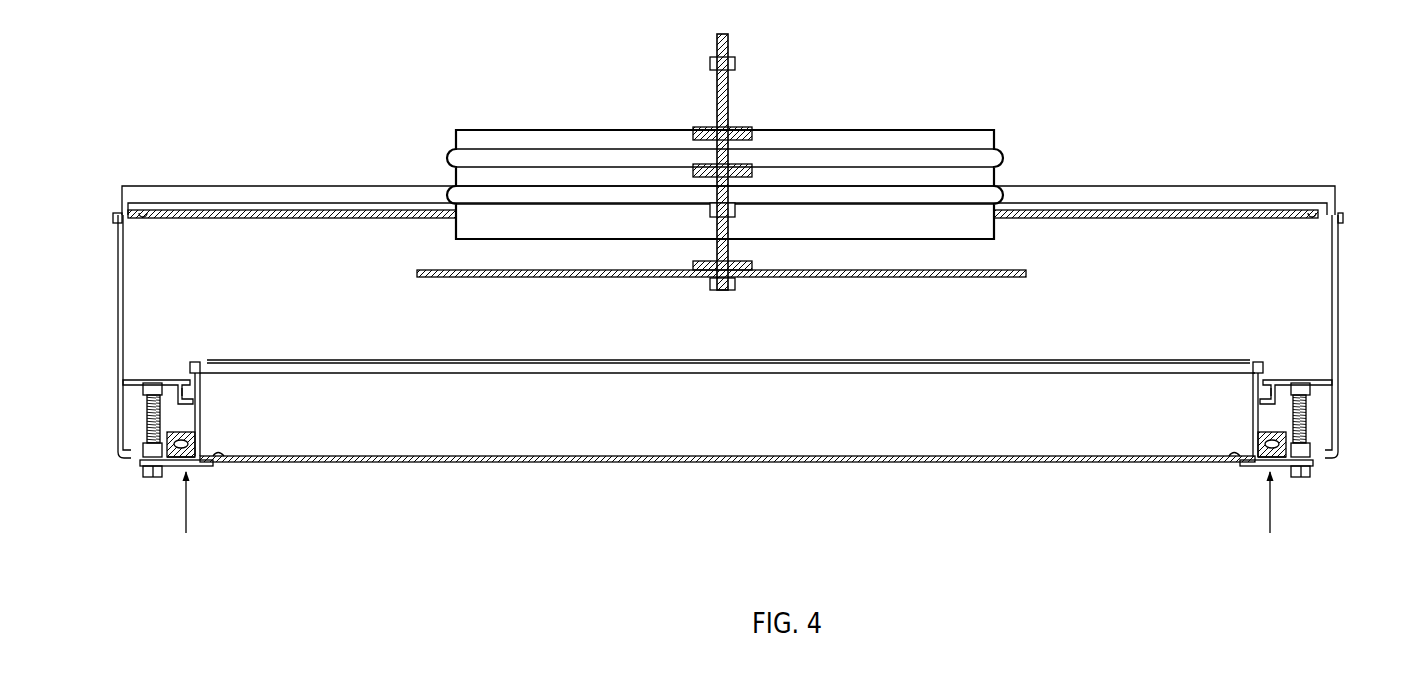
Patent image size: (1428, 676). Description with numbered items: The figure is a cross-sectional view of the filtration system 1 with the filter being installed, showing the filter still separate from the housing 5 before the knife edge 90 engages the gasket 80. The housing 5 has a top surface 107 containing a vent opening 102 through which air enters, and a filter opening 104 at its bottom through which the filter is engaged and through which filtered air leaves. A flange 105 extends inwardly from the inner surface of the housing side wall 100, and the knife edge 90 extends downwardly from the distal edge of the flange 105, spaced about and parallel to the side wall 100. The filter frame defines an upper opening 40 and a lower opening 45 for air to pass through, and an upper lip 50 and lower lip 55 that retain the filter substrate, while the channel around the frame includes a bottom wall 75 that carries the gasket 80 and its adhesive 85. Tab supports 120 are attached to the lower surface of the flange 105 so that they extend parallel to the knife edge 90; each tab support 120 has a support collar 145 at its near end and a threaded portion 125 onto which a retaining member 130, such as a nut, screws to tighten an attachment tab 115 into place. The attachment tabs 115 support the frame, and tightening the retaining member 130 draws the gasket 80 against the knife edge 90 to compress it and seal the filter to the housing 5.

The filtration system 1 is at (225, 102).
The housing 5 is at (112, 230).
The upper opening 40 is at (350, 358).
The lower opening 45 is at (368, 466).
The upper lip 50 is at (206, 366).
The lower lip 55 is at (218, 452).
The bottom wall 75 is at (180, 461).
The gasket 80 is at (196, 437).
The adhesive 85 is at (189, 462).
The knife edge 90 is at (186, 398).
The housing side wall 100 is at (1345, 265).
The vent opening 102 is at (928, 127).
The filter opening 104 is at (305, 471).
The flange 105 is at (132, 378).
The top surface 107 is at (1090, 203).
The attachment tab 115 is at (141, 449).
The tab support 120 is at (143, 417).
The threaded portion 125 is at (147, 408).
The retaining member 130 is at (150, 470).
The support collar 145 is at (145, 388).